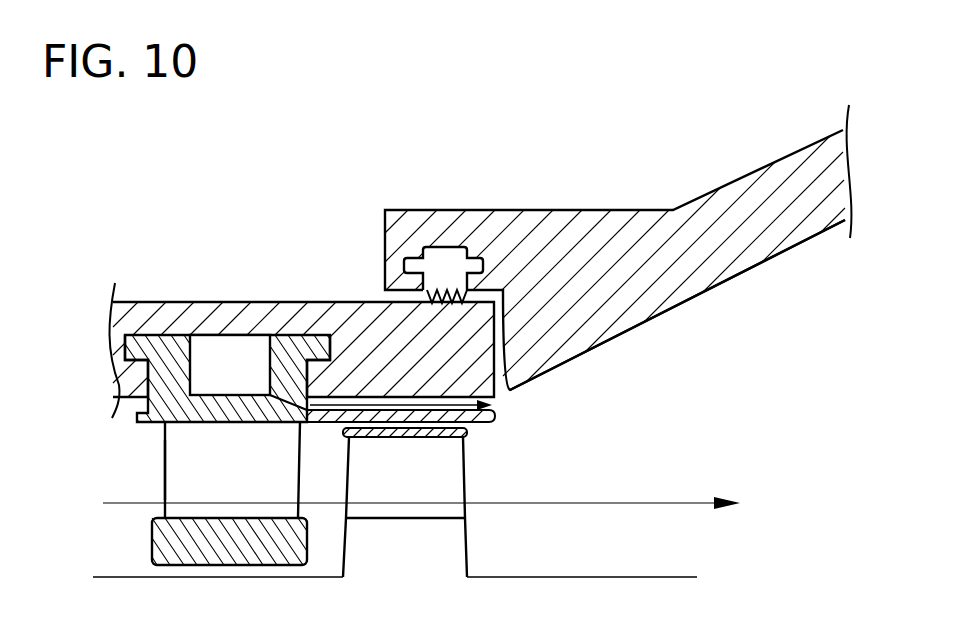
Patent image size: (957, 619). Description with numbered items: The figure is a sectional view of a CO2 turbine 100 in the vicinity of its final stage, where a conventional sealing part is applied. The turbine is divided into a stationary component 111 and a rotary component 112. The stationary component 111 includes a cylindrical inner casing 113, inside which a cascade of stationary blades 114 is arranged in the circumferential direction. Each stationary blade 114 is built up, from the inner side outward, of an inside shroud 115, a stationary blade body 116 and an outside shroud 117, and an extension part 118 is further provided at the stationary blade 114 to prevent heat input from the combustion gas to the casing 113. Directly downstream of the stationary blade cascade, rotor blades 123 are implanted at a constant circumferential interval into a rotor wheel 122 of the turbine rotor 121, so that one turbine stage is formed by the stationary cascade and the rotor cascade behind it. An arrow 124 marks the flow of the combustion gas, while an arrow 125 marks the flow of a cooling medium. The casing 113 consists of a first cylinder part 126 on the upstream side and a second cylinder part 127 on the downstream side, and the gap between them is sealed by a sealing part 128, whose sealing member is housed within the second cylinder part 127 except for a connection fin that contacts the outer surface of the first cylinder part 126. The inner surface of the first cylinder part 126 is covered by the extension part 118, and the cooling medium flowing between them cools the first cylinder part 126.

The CO2 turbine 100 is at (140, 197).
The stationary component 111 is at (760, 327).
The rotary component 112 is at (760, 578).
The inner casing 113 is at (85, 304).
The stationary blade 114 is at (150, 493).
The inside shroud 115 is at (175, 543).
The stationary blade body 116 is at (177, 458).
The outside shroud 117 is at (180, 421).
The extension part 118 is at (497, 417).
The turbine rotor 121 is at (623, 590).
The rotor wheel 122 is at (448, 552).
The rotor blade 123 is at (448, 473).
The flow of the combustion gas 124 is at (640, 503).
The flow of a cooling medium 125 is at (495, 401).
The first cylinder part 126 is at (245, 302).
The second cylinder part 127 is at (623, 227).
The sealing part 128 is at (502, 276).